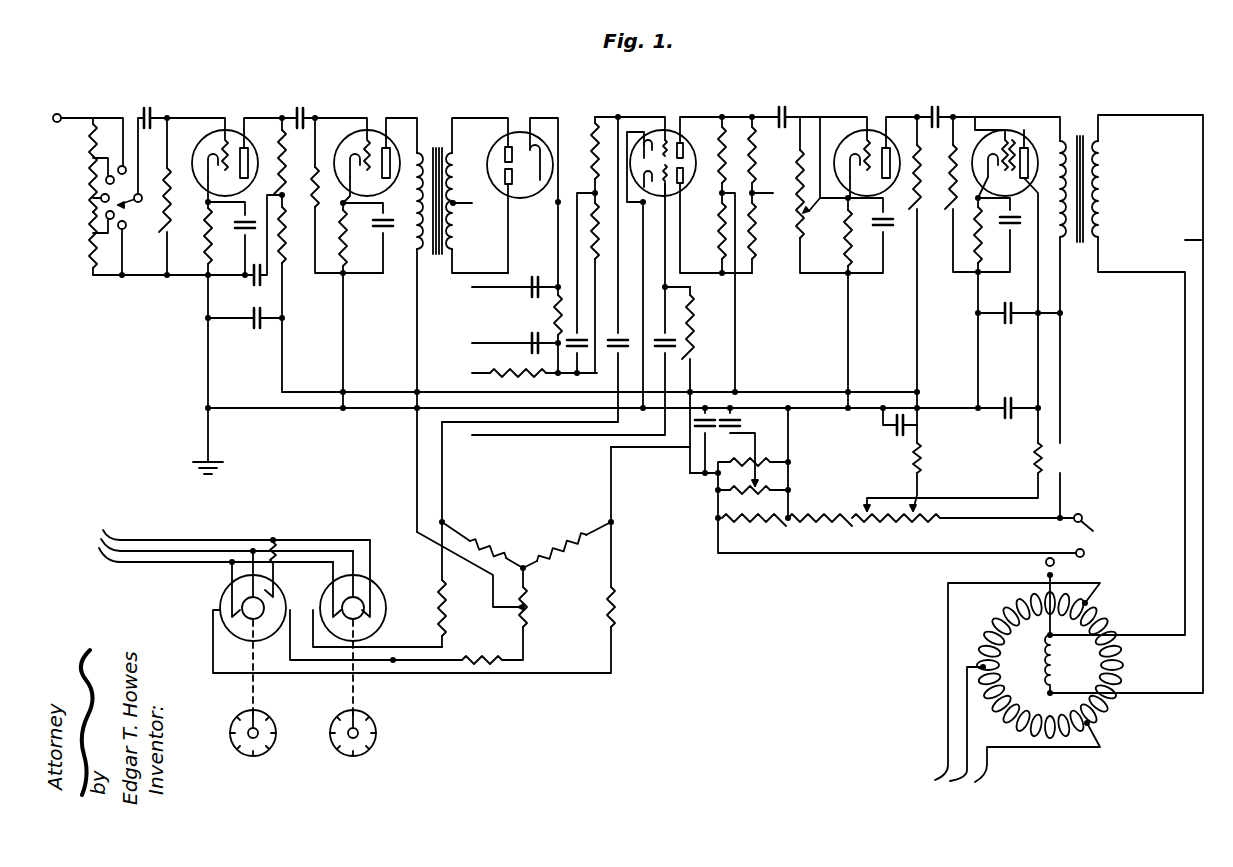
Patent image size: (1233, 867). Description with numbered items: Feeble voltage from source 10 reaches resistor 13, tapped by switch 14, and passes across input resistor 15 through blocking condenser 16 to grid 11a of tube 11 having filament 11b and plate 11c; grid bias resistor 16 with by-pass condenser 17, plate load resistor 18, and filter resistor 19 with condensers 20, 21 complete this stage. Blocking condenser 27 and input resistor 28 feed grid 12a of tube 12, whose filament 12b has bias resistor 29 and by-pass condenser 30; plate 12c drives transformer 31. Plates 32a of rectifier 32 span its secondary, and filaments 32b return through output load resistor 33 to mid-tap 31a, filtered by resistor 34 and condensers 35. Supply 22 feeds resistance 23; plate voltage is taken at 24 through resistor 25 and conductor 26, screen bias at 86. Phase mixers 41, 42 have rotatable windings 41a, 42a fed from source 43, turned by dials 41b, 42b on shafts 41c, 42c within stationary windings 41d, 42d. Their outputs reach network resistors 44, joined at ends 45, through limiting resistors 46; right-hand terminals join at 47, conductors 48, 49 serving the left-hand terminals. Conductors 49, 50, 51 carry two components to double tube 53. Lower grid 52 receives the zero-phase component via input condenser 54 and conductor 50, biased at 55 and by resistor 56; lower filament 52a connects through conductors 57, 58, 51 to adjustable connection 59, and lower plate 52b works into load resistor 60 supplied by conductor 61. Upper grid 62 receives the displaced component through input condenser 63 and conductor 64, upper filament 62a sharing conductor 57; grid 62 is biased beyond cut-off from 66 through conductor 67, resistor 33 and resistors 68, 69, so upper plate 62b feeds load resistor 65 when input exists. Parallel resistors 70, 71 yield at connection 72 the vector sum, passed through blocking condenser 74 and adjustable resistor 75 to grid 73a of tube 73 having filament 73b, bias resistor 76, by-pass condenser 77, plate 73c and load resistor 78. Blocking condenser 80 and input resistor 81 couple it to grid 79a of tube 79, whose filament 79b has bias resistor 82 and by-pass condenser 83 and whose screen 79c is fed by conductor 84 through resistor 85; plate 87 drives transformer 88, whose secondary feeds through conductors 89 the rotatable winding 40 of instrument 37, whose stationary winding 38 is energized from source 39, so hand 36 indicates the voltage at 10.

The source 10 is at (70, 124).
The resistor 13 is at (88, 186).
The one-pole, five-position switch 14 is at (150, 219).
The input resistor 15 is at (170, 203).
The blocking condenser and grid bias resistor 16 is at (149, 112).
The by-pass condenser 17 is at (242, 229).
The three-element electron discharge tube 11 is at (210, 125).
The grid 11a is at (226, 140).
The heating element or filament 11b is at (210, 158).
The plate 11c is at (262, 146).
The plate circuit load resistor 18 is at (285, 168).
The resistor 19 is at (305, 232).
The filter condenser 20 is at (252, 280).
The filter condenser 21 is at (252, 326).
The blocking condenser 27 is at (300, 108).
The input resistor 28 is at (317, 195).
The grid bias resistor 29 is at (347, 240).
The by-pass condenser 30 is at (378, 223).
The amplifying electron discharge tube 12 is at (355, 128).
The grid 12a is at (368, 140).
The heating element or filament 12b is at (352, 158).
The plate 12c is at (398, 143).
The iron core transformer 31 is at (447, 100).
The mid-tap 31a is at (458, 204).
The double two-element rectifying tube 32 is at (520, 132).
The plates 32a is at (504, 176).
The heating elements or filaments 32b is at (540, 182).
The output load resistor 33 is at (524, 373).
The resistor 34 is at (552, 310).
The filter condensers 35 is at (536, 280).
The output circuit load resistor 69 is at (592, 165).
The resistor 68 is at (598, 207).
The input condenser 63 is at (585, 340).
The conductor 64 is at (617, 262).
The conductor 57 is at (620, 300).
The input condenser 54 is at (662, 340).
The grid bias resistor 56 is at (693, 318).
The grid 62 is at (658, 140).
The upper filament or heating element 62a is at (644, 140).
The upper plate 62b is at (683, 143).
The double three-element electron discharge tube 53 is at (668, 138).
The lower grid 52 is at (664, 190).
The lower filament or heating element 52a is at (640, 205).
The lower plate 52b is at (685, 185).
The output circuit load resistor 65 is at (718, 160).
The output circuit load resistor 60 is at (718, 250).
The plate circuit load resistor 70 is at (750, 165).
The plate circuit load resistor 71 is at (756, 235).
The connection 72 is at (768, 193).
The blocking condenser 74 is at (786, 108).
The adjustable input circuit load resistor 75 is at (804, 225).
The amplifying three-element electron discharge tube 73 is at (870, 130).
The grid 73a is at (865, 158).
The filament or heating element 73b is at (848, 196).
The plate 73c is at (886, 180).
The grid bias resistor 76 is at (852, 235).
The by-pass condenser 77 is at (888, 230).
The blocking condenser 80 is at (936, 106).
The input load resistor 81 is at (950, 170).
The plate circuit load resistor 78 is at (920, 215).
The filament or heating element 79b is at (960, 168).
The four-element electron discharge tube 79 is at (1012, 140).
The grid 79a is at (995, 148).
The screen 79c is at (1000, 140).
The plate 87 is at (1025, 165).
The grid bias resistor 82 is at (975, 235).
The by-pass condenser 83 is at (1012, 228).
The conductor 84 is at (1036, 350).
The resistor 85 is at (1034, 460).
The iron core transformer 88 is at (1092, 105).
The conductors 89 is at (1185, 237).
The resistor 25 is at (920, 460).
The plate voltage tap 24 is at (913, 515).
The source of biasing voltage 86 is at (867, 515).
The resistance 23 is at (840, 506).
The grid bias point 55 is at (740, 488).
The grid bias voltage point 66 is at (747, 460).
The source of supply 22 is at (1088, 551).
The stylus, pen, or indicating hand 36 is at (1056, 568).
The voltage indicating or recording instrument 37 is at (1153, 611).
The stationary three-phase distributed winding 38 is at (1108, 705).
The three-phase alternating-current source of supply 39 is at (985, 784).
The single-phase two-pole concentrated winding 40 is at (1056, 665).
The conductor 26 is at (377, 390).
The conductor 58 is at (390, 411).
The conductor 51 is at (415, 478).
The conductor 49 is at (442, 480).
The conductor 50 is at (611, 480).
The conductor 67 is at (565, 437).
The conductor 61 is at (737, 320).
The three-phase alternating-current source of supply 43 is at (234, 537).
The phase mixer 41 is at (200, 593).
The three-phase distributed rotatable winding 41a is at (222, 624).
The dial 41b is at (231, 722).
The shaft 41c is at (253, 693).
The stationary distributed single-phase winding 41d is at (275, 565).
The phase mixer 42 is at (405, 580).
The three-phase distributed rotatable winding 42a is at (386, 600).
The dial 42b is at (378, 725).
The shaft 42c is at (353, 696).
The stationary distributed single-phase winding 42d is at (333, 585).
The network resistors 44 is at (535, 548).
The adjacent ends 45 is at (527, 569).
The output limiting resistors 46 is at (447, 612).
The connection 47 is at (395, 658).
The conductor 48 is at (512, 675).
The adjustable connection 59 is at (527, 622).